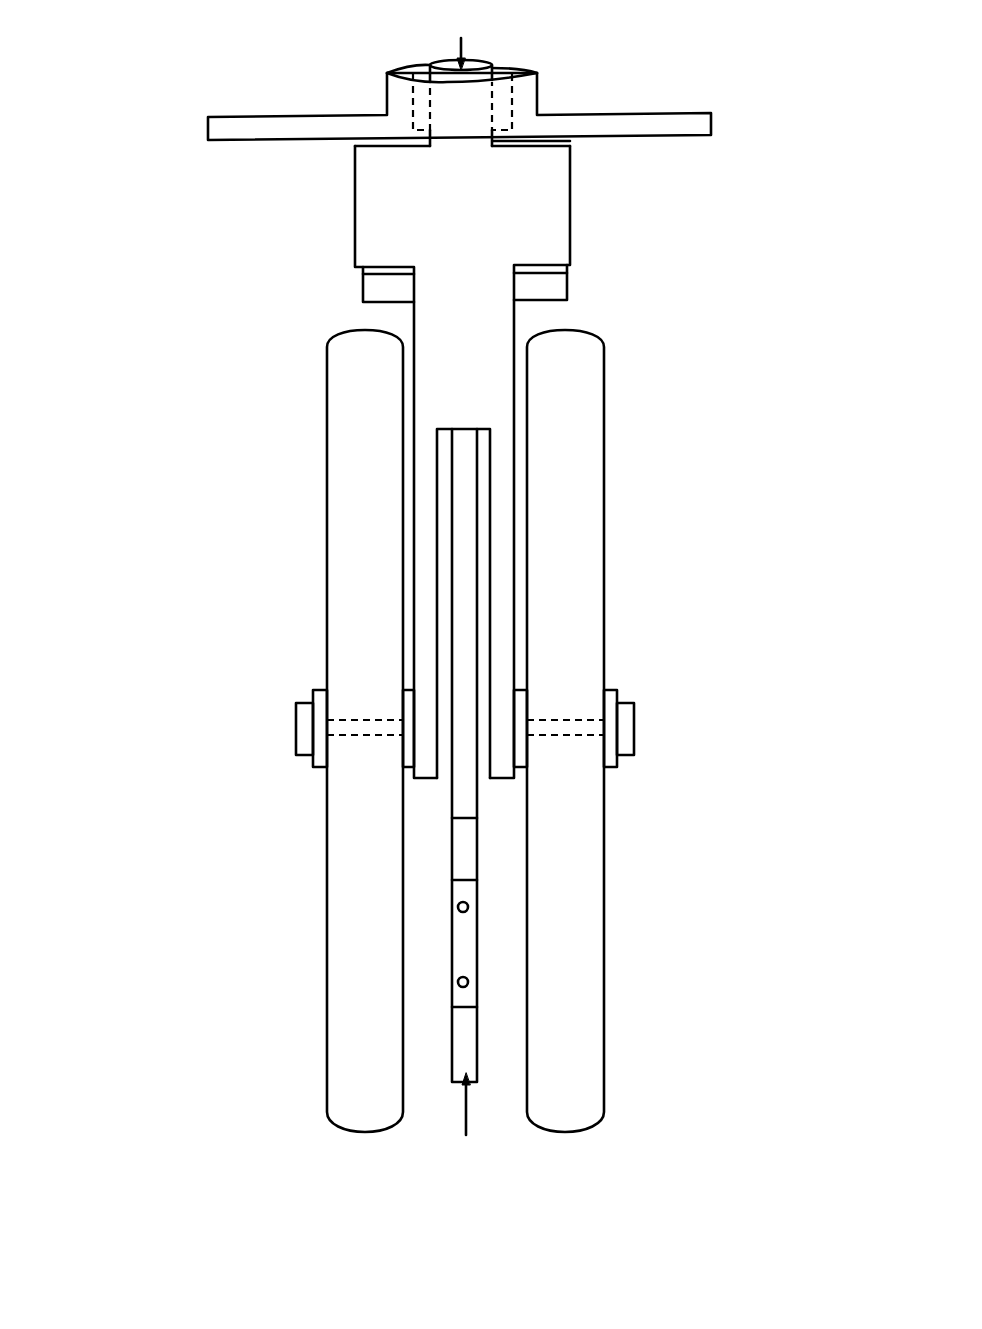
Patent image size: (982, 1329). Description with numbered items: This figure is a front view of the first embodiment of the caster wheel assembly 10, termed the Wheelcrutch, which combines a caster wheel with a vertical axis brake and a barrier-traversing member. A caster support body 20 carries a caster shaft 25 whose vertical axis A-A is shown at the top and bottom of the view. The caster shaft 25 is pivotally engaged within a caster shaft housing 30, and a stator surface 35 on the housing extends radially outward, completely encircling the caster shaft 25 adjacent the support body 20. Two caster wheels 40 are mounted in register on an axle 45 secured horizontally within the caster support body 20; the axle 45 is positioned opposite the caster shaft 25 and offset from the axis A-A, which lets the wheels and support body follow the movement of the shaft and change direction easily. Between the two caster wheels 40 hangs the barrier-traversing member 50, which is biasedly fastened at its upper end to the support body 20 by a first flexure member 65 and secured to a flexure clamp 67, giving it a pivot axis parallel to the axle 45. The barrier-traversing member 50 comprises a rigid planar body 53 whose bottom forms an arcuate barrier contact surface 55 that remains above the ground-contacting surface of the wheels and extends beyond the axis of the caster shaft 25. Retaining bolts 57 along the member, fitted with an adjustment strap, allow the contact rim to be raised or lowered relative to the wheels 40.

The caster wheel assembly 10 is at (196, 461).
The caster support body 20 is at (485, 342).
The caster shaft 25 is at (478, 72).
The caster shaft housing 30 is at (423, 100).
The stator surface 35 is at (232, 140).
The caster wheel 40 is at (358, 395).
The axle 45 is at (367, 727).
The barrier-traversing member 50 is at (710, 496).
The planar body 53 is at (463, 670).
The barrier contact surface 55 is at (463, 1053).
The retaining bolts 57 is at (470, 982).
The first flexure member 65 is at (380, 273).
The flexure clamp 67 is at (382, 290).